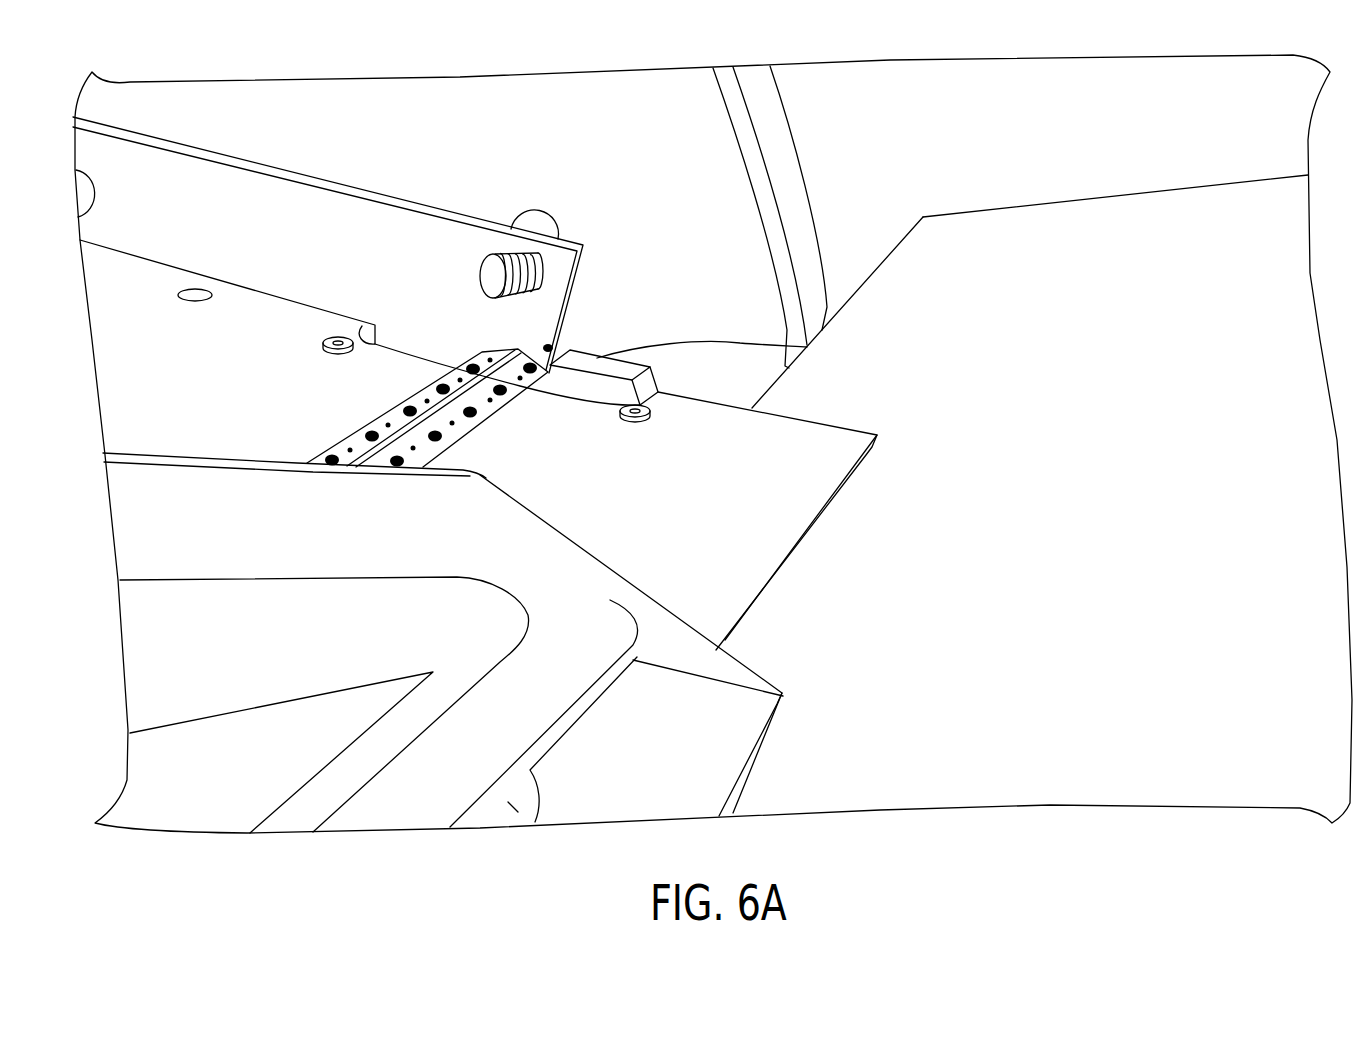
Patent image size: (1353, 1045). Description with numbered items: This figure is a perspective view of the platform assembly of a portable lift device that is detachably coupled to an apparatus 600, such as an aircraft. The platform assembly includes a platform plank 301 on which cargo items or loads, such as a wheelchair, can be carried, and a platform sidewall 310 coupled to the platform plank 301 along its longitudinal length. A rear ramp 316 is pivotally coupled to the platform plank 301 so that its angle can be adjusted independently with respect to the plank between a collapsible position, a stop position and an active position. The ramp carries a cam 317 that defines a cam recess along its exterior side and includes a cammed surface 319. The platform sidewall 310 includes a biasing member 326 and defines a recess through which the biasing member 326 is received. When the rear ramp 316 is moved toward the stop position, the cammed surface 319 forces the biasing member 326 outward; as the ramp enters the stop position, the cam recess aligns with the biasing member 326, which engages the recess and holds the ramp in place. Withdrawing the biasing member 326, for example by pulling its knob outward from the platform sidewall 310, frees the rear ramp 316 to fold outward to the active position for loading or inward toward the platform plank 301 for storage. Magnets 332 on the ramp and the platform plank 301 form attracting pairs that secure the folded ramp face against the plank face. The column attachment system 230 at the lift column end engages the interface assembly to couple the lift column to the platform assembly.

The apparatus 600 is at (873, 177).
The platform plank 301 is at (153, 385).
The platform sidewall 310 is at (288, 270).
The biasing member 326 is at (537, 213).
The cammed surface 319 is at (550, 347).
The cam 317 is at (807, 347).
The rear ramp 316 is at (700, 587).
The magnets 332 is at (337, 353).
The column attachment system 230 is at (540, 552).